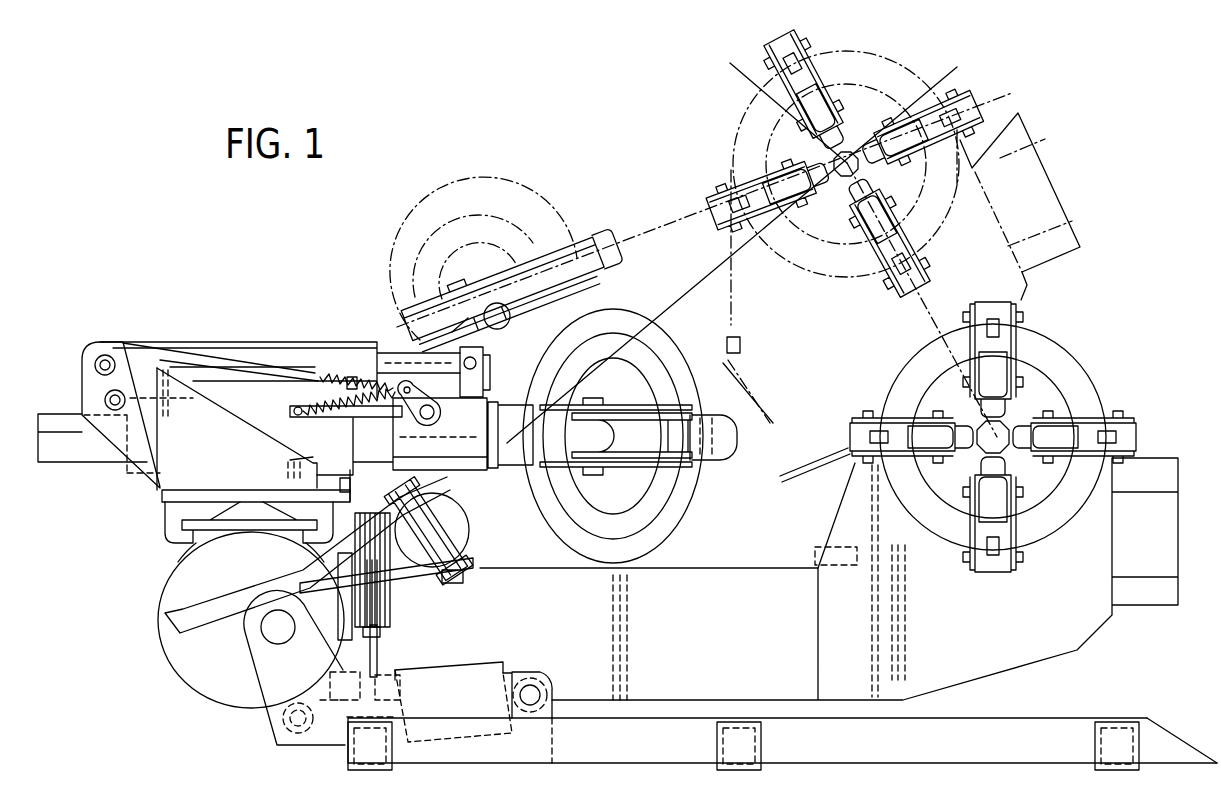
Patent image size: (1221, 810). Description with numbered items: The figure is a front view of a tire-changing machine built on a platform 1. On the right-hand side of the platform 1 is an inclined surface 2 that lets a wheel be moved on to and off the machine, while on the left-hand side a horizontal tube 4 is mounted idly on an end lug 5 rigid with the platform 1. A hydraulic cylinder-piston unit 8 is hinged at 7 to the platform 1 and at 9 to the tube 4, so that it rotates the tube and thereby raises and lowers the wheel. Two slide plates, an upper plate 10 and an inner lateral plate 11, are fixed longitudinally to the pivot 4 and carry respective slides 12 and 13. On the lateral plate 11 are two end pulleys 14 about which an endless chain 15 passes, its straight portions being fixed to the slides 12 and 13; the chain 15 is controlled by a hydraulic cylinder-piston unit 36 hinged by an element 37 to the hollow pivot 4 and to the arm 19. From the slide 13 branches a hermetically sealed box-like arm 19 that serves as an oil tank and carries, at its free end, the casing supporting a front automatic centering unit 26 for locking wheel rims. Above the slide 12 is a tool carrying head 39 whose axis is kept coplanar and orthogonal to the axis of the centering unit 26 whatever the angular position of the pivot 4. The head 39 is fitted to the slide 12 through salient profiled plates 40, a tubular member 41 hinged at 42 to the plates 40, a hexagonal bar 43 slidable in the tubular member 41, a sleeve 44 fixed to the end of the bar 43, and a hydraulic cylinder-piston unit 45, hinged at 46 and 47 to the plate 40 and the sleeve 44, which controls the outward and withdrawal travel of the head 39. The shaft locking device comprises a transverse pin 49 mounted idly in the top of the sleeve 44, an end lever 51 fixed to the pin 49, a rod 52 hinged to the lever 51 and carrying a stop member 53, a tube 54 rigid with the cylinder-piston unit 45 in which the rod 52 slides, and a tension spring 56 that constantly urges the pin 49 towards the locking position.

The platform 1 is at (965, 732).
The inclined surface 2 is at (1156, 740).
The horizontal tube 4 is at (180, 655).
The end lug 5 is at (265, 682).
The hinge 7 is at (548, 688).
The hydraulic cylinder-piston unit 8 is at (478, 668).
The hinge 9 is at (277, 740).
The upper plate 10 is at (180, 560).
The inner lateral plate 11 is at (335, 643).
The slide 12 is at (175, 512).
The slide 13 is at (370, 658).
The end pulley 14 is at (390, 598).
The endless chain 15 is at (383, 623).
The box-like arm 19 is at (720, 650).
The automatic centering unit 26 is at (1074, 552).
The hydraulic cylinder-piston unit 36 is at (455, 528).
The hinge element 37 is at (178, 605).
The tool carrying head 39 is at (666, 486).
The profiled plate 40 is at (178, 478).
The tubular member 41 is at (260, 414).
The hinge 42 is at (127, 403).
The hexagonal bar 43 is at (58, 420).
The sleeve 44 is at (472, 462).
The hydraulic cylinder-piston unit 45 is at (273, 353).
The hinge 46 is at (105, 353).
The hinge 47 is at (483, 368).
The transverse pin 49 is at (436, 415).
The end lever 51 is at (405, 365).
The rod 52 is at (322, 372).
The stop member 53 is at (352, 375).
The tube 54 is at (205, 360).
The tension spring 56 is at (340, 416).